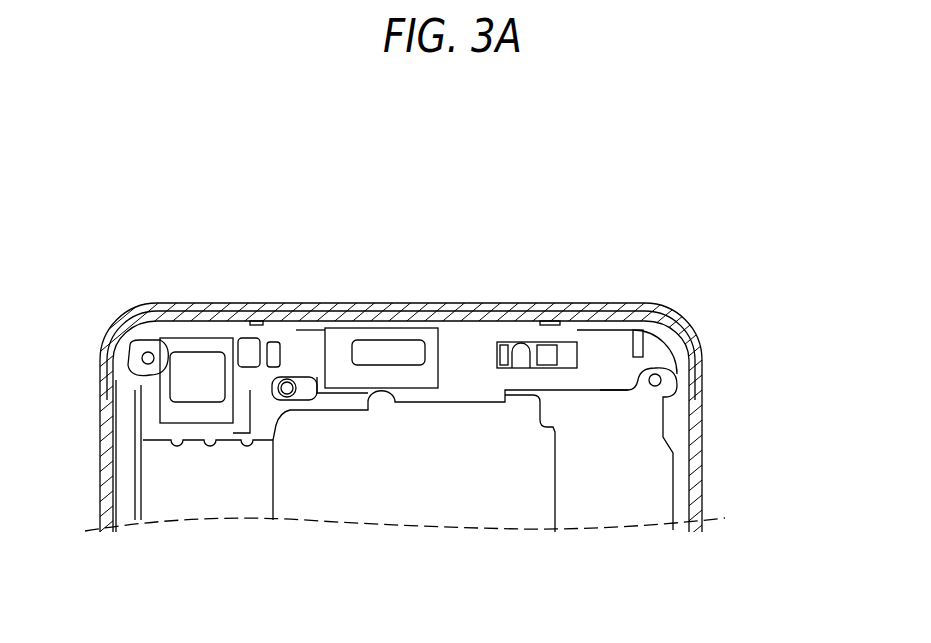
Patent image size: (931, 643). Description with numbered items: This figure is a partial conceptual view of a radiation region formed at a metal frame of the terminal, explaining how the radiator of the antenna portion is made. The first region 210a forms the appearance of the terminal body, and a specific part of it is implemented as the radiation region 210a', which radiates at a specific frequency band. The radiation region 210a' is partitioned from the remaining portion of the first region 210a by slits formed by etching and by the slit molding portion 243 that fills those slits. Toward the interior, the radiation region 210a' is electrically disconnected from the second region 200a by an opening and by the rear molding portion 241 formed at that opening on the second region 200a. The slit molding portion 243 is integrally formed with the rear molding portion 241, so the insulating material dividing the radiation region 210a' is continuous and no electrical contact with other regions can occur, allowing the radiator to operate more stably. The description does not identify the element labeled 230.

The slit molding portion 243 is at (547, 303).
The first region 210a is at (398, 376).
The fastening member 230 is at (300, 303).
The radiation region 210a' is at (381, 315).
The rear molding portion 241 is at (487, 383).
The second region 200a is at (368, 497).